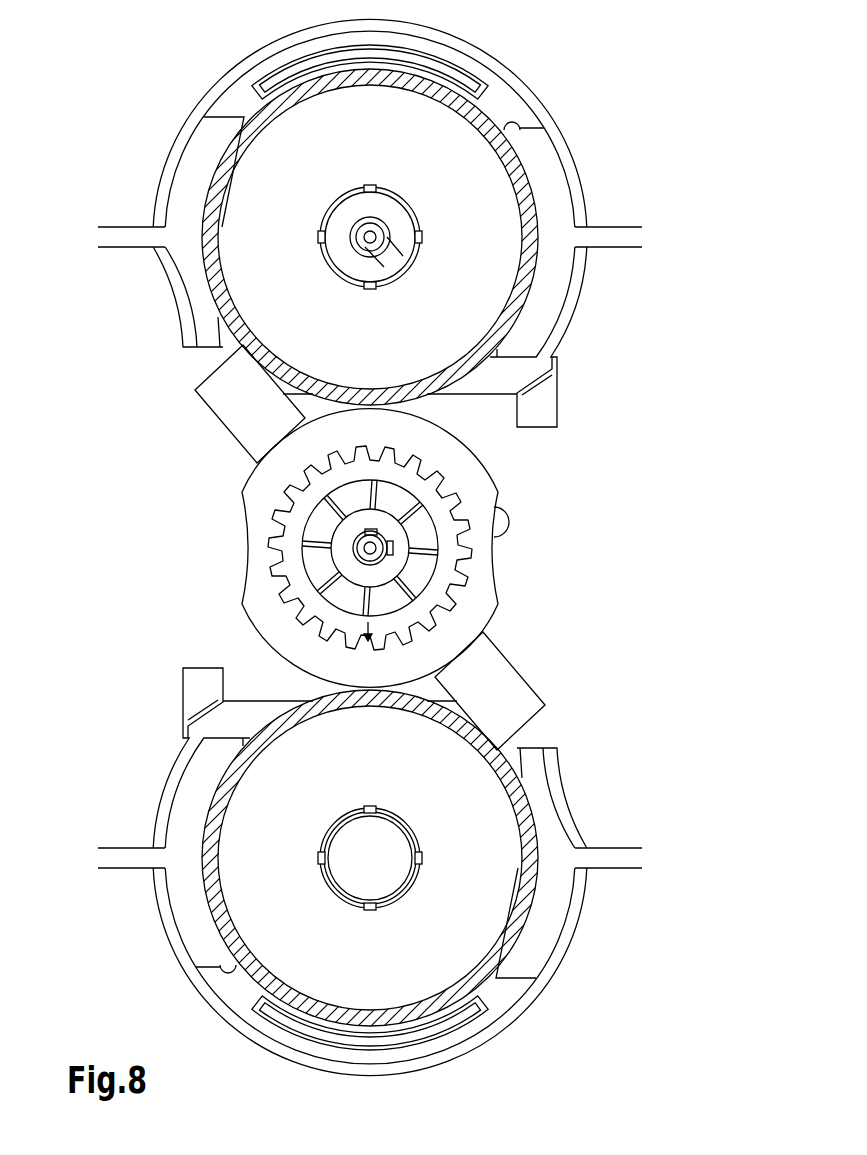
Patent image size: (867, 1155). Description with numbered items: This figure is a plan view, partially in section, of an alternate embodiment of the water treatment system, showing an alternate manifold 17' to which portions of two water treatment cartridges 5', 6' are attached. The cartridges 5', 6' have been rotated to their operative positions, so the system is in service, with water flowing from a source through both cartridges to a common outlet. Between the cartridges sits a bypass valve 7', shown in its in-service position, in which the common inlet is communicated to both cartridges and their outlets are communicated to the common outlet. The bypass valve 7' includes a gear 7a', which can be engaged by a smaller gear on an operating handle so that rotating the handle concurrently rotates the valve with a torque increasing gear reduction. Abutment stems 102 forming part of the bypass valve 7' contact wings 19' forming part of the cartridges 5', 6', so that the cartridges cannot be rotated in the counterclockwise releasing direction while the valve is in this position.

The cartridge 5' is at (370, 223).
The cartridge 6' is at (370, 872).
The bypass valve 7' is at (416, 548).
The gear 7a' is at (437, 548).
The alternate manifold 17' is at (725, 268).
The wing 19' is at (354, 547).
The abutment stem 102 is at (247, 412).